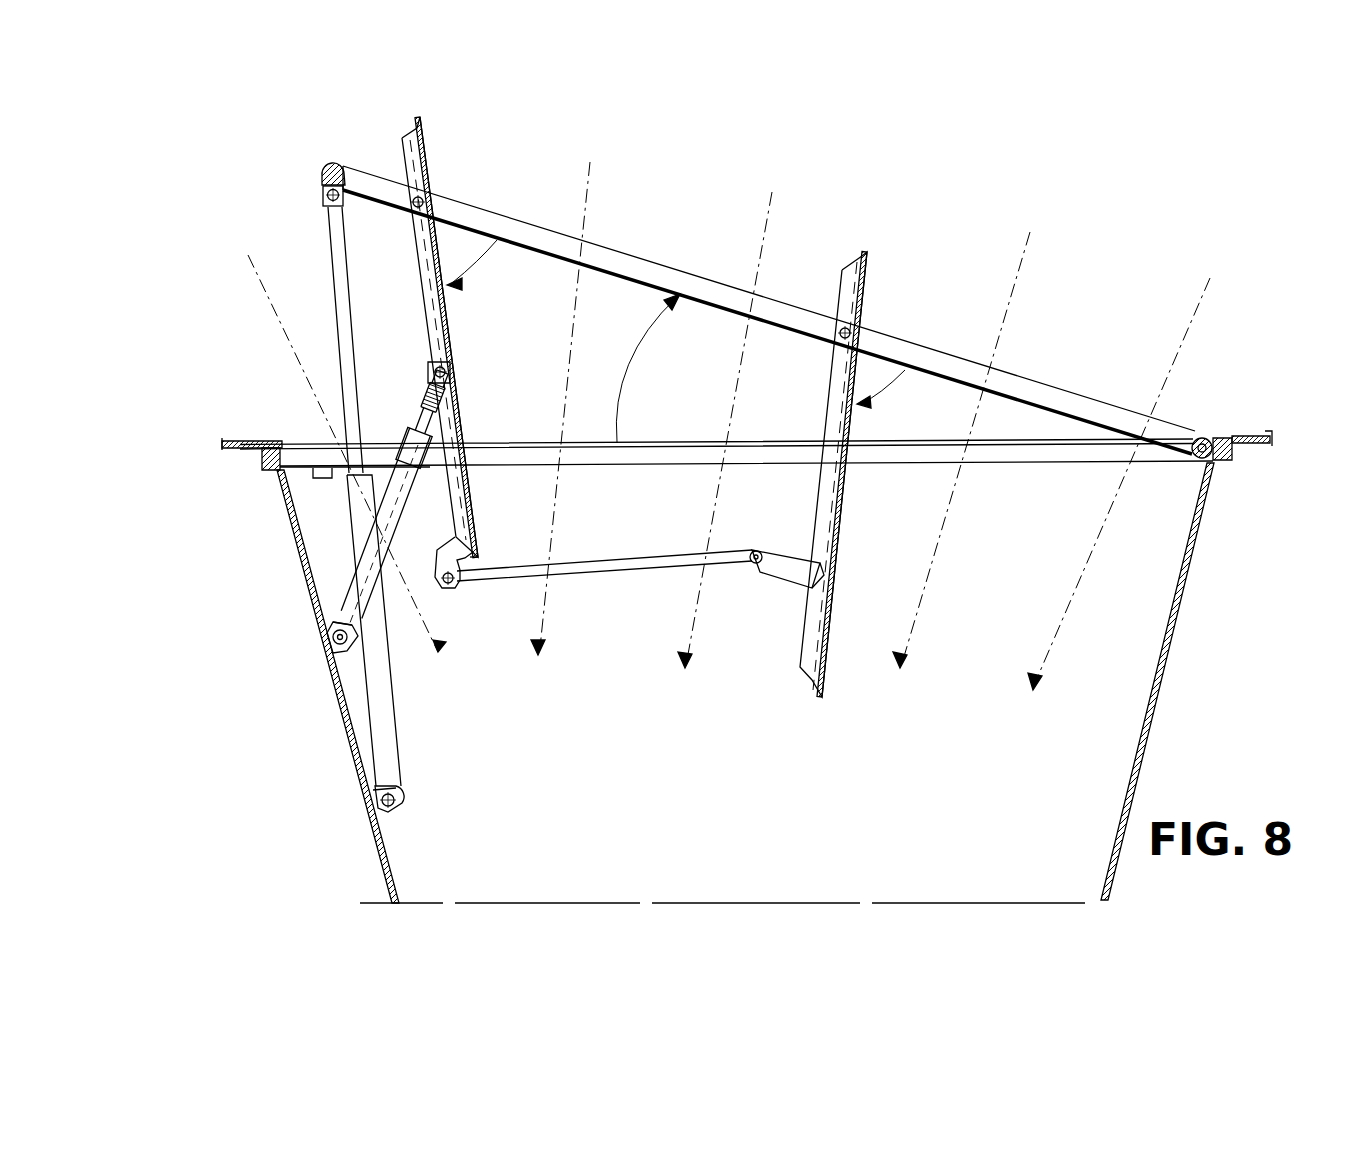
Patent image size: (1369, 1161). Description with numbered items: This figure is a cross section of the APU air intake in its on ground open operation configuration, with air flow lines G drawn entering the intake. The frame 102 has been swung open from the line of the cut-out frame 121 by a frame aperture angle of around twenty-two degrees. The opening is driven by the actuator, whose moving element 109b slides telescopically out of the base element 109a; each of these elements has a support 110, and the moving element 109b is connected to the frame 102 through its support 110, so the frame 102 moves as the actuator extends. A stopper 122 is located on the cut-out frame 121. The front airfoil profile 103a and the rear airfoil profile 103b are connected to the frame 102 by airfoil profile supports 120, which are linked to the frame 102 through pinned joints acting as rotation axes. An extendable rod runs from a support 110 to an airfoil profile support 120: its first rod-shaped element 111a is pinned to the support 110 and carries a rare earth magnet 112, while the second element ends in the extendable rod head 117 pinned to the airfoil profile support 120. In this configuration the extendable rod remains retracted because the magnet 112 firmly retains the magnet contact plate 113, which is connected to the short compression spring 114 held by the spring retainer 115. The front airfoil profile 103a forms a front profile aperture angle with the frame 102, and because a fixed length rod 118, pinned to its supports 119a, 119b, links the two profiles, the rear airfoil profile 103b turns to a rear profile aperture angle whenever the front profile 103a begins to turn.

The frame 102 is at (637, 266).
The front airfoil profile 103a is at (432, 177).
The rear airfoil profile 103b is at (866, 300).
The actuator base element 109a is at (385, 705).
The actuator moving element 109b is at (336, 288).
The supports 110 is at (325, 188).
The extendable rod first rod-shaped element 111a is at (346, 603).
The rare earth magnet 112 is at (413, 430).
The magnet contact plate 113 is at (433, 416).
The short compression spring 114 is at (445, 402).
The spring retainer 115 is at (450, 377).
The extendable rod head 117 is at (455, 352).
The fixed length rod 118 is at (605, 568).
The fixed length rod support 119a is at (455, 580).
The fixed length rod support 119b is at (778, 578).
The airfoil profile supports 120 is at (425, 250).
The cut-out frame 121 is at (652, 457).
The stopper 122 is at (313, 468).
The air flow lines G is at (714, 413).